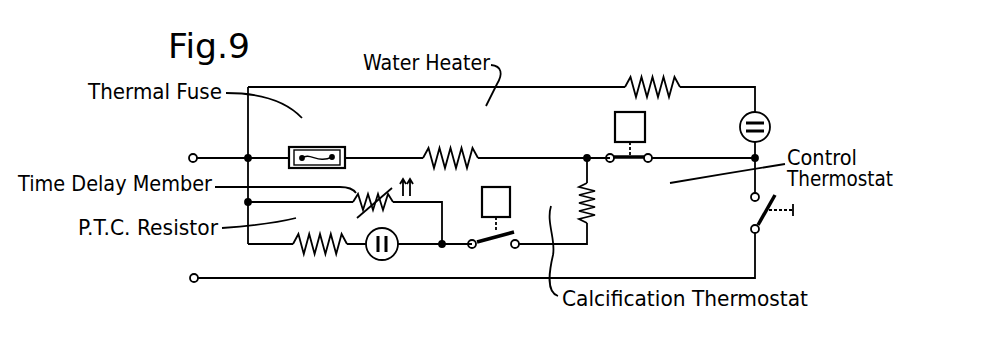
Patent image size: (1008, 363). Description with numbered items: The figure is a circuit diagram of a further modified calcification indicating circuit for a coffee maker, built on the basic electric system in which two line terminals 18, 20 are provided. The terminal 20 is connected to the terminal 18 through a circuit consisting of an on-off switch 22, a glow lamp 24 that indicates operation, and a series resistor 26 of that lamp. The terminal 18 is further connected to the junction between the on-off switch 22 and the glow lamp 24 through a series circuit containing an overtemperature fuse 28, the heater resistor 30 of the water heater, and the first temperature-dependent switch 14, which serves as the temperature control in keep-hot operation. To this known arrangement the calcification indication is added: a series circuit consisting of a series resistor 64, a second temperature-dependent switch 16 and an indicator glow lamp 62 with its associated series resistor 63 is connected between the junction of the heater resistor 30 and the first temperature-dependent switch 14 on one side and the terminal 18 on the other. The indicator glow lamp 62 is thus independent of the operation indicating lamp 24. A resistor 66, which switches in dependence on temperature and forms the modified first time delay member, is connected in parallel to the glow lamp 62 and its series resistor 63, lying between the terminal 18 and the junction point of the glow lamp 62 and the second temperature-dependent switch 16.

The temperature-dependent switch 14 is at (638, 164).
The second temperature-dependent switch 16 is at (551, 188).
The line terminal 18 is at (190, 152).
The line terminal 20 is at (191, 283).
The on-off switch 22 is at (768, 226).
The glow lamp 24 is at (767, 113).
The series resistor 26 is at (646, 79).
The overtemperature fuse 28 is at (300, 147).
The heater resistor 30 is at (461, 148).
The indicator glow lamp 62 is at (391, 260).
The series resistor 63 is at (311, 254).
The series resistor 64 is at (596, 226).
The temperature-dependent resistor 66 is at (353, 204).